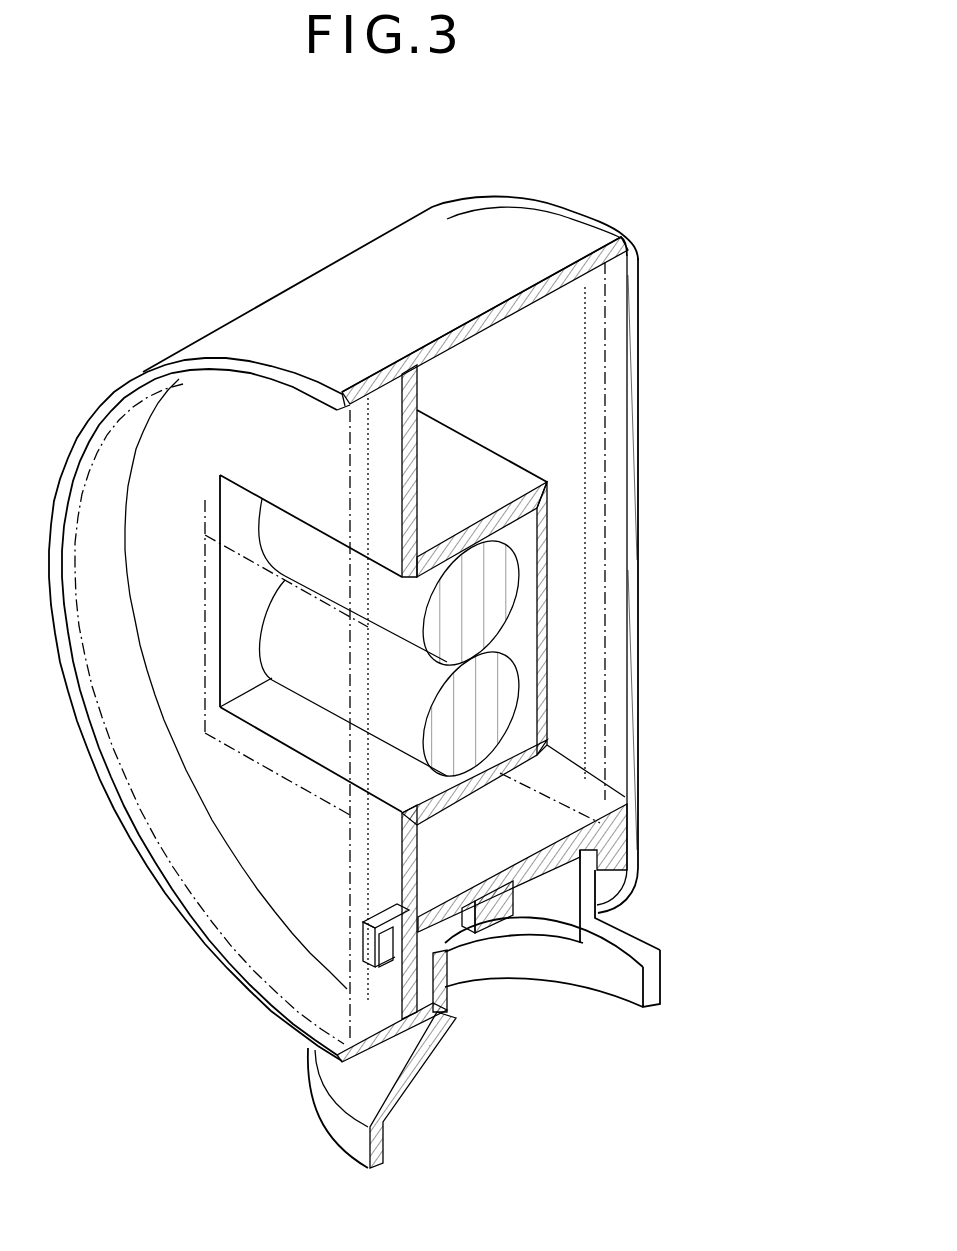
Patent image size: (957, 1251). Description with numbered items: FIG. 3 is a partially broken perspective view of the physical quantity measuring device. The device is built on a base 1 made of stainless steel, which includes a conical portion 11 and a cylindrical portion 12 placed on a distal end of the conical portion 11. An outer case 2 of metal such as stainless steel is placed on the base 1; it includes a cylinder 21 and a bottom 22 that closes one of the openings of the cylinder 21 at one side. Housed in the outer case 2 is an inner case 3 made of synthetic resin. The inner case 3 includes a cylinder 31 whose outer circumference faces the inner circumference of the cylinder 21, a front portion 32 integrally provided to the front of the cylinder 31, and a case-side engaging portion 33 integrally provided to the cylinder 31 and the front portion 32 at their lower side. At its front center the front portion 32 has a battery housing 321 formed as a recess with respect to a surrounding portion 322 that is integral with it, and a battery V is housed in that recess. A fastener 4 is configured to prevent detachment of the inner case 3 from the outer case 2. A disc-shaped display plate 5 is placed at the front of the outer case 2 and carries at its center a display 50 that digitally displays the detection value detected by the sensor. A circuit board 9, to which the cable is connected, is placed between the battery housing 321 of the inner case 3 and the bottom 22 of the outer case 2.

The base 1 is at (552, 984).
The conical portion 11 is at (627, 985).
The cylindrical portion 12 is at (578, 907).
The outer case 2 is at (393, 596).
The cylinder 21 is at (543, 240).
The bottom 22 is at (634, 412).
The inner case 3 is at (449, 692).
The cylinder 31 is at (480, 355).
The front portion 32 is at (388, 550).
The battery housing 321 is at (470, 783).
The surrounding portion 322 is at (402, 483).
The case-side engaging portion 33 is at (394, 932).
The fastener 4 is at (500, 935).
The display plate 5 is at (340, 988).
The circuit board 9 is at (607, 523).
The display 50 is at (205, 577).
The battery V is at (478, 626).